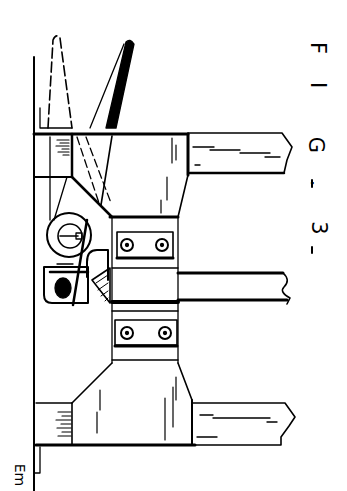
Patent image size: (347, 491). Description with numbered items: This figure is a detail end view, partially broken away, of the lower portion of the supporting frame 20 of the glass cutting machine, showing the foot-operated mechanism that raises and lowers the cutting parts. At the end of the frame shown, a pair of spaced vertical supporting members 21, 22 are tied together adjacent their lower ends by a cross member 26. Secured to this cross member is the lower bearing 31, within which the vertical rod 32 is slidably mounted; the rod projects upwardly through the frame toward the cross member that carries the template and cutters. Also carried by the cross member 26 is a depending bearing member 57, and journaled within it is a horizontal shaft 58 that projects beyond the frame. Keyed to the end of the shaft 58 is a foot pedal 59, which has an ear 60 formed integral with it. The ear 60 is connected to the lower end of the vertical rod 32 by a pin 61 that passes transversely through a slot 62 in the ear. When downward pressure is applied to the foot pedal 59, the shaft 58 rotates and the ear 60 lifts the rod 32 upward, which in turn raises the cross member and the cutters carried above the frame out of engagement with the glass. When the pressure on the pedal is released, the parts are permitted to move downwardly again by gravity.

The supporting frame 20 is at (190, 186).
The vertical supporting member 21 is at (254, 433).
The vertical supporting member 22 is at (264, 172).
The cross member 26 is at (178, 361).
The bearing 31 is at (182, 287).
The vertical rod 32 is at (270, 299).
The depending bearing member 57 is at (50, 221).
The horizontal shaft 58 is at (47, 246).
The foot pedal 59 is at (66, 63).
The ear 60 is at (53, 269).
The pin 61 is at (53, 300).
The slot 62 is at (73, 303).